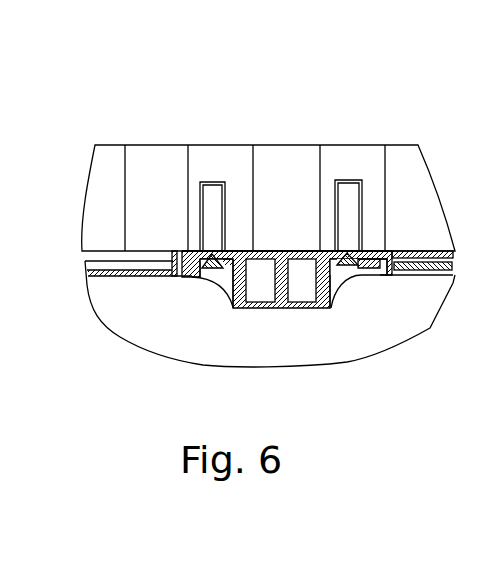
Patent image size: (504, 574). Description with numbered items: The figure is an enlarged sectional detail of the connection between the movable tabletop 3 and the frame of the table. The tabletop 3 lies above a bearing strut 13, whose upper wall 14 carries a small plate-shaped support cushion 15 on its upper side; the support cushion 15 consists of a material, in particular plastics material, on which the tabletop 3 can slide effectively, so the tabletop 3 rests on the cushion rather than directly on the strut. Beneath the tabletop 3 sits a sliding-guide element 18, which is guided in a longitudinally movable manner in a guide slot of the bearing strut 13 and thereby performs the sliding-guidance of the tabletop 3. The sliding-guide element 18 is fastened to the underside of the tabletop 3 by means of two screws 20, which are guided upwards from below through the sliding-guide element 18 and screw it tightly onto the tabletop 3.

The tabletop 3 is at (147, 165).
The screws 20 is at (208, 202).
The sliding-guide element 18 is at (283, 253).
The support cushion 15 is at (437, 250).
The bearing strut 13 is at (272, 377).
The upper wall 14 is at (413, 275).